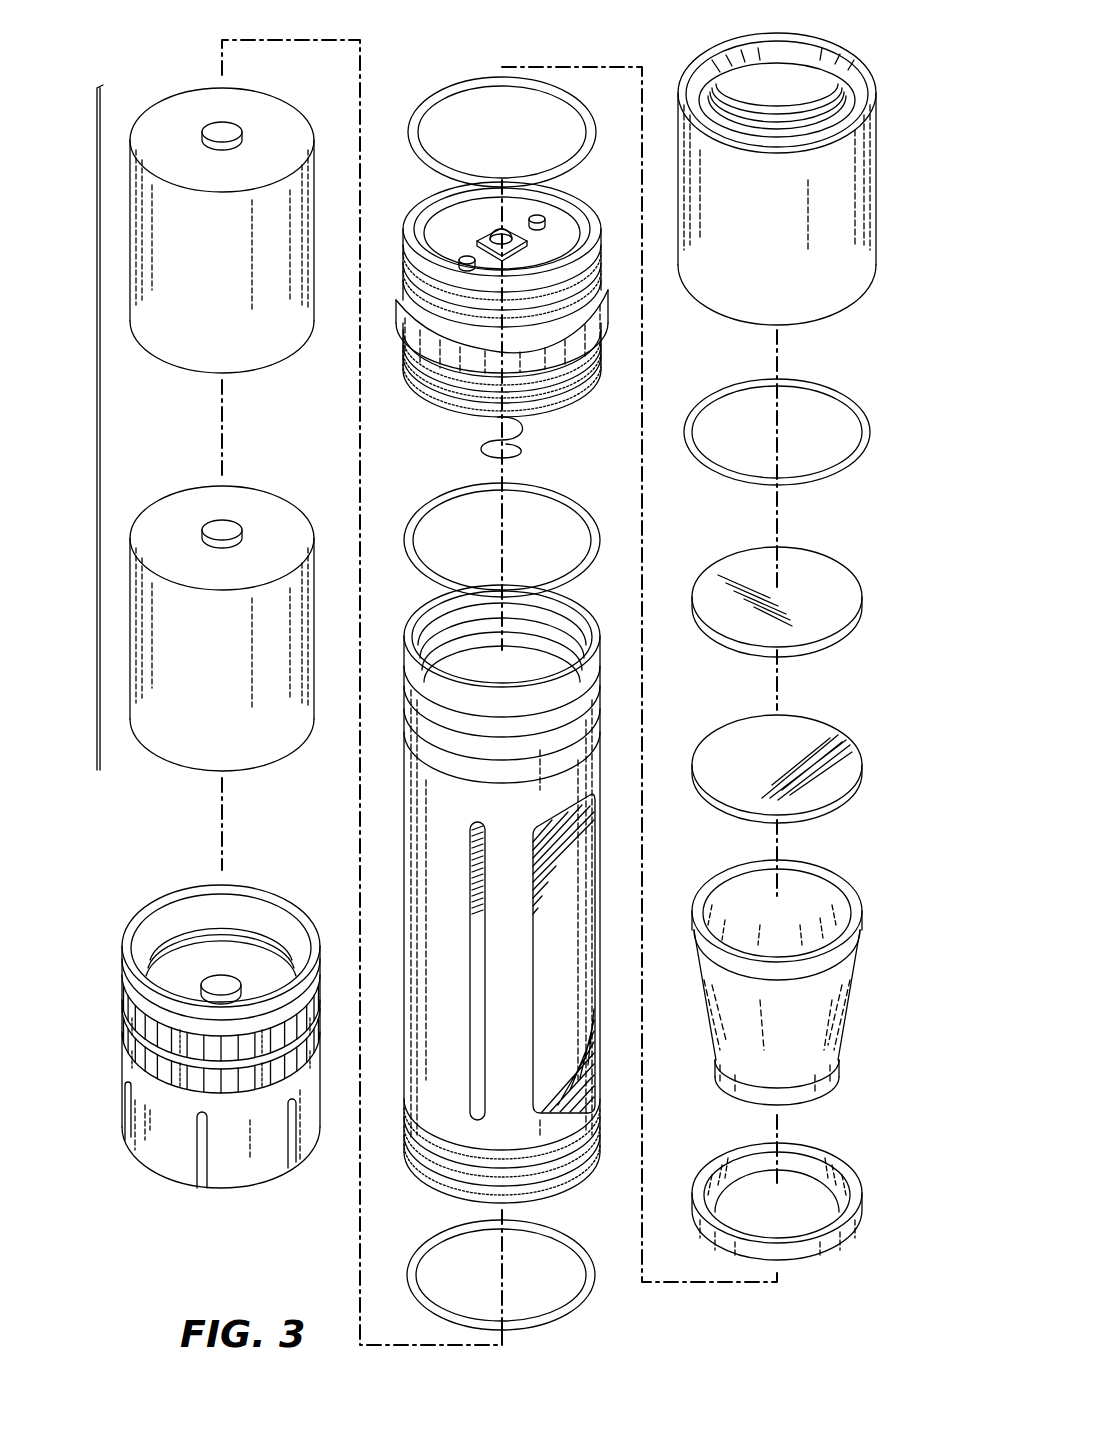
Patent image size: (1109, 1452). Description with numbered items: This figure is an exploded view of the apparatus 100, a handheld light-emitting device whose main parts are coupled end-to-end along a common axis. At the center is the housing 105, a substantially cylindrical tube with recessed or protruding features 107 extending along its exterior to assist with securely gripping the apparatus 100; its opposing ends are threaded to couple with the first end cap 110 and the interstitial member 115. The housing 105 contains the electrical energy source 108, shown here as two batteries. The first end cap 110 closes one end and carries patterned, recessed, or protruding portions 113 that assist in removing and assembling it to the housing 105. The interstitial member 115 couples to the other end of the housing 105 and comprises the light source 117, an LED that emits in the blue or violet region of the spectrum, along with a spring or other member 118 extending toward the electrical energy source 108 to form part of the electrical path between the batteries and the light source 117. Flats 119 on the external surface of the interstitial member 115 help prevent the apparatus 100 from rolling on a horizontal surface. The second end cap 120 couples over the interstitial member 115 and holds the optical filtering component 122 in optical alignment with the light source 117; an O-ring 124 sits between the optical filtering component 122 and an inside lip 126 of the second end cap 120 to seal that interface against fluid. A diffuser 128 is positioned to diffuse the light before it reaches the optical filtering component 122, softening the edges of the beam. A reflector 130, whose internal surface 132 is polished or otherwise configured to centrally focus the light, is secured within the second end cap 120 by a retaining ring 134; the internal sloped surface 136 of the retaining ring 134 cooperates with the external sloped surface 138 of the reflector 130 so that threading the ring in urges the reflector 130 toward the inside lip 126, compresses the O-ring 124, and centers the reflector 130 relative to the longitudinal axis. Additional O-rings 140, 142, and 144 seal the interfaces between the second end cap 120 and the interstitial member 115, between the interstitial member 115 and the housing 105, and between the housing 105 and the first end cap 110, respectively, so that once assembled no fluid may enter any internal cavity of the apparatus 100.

The apparatus 100 is at (138, 44).
The housing 105 is at (585, 1183).
The recessed and/or protruding features 107 is at (590, 950).
The electrical energy source 108 is at (97, 421).
The first end cap 110 is at (150, 1160).
The patterned, recessed, and/or protruding portions 113 is at (124, 995).
The interstitial member 115 is at (578, 392).
The light source 117 is at (495, 235).
The spring and/or other member 118 is at (480, 450).
The flats 119 is at (438, 356).
The second end cap 120 is at (880, 178).
The optical filtering component 122 is at (815, 565).
The O-ring 124 is at (838, 388).
The inside lip 126 is at (805, 82).
The diffuser 128 is at (805, 735).
The reflector 130 is at (866, 972).
The internal surface 132 is at (830, 890).
The retaining ring 134 is at (810, 1248).
The internal sloped surface 136 is at (812, 1165).
The external sloped surface 138 is at (833, 1013).
The O-ring 140 is at (432, 92).
The O-ring 142 is at (590, 512).
The O-ring 144 is at (590, 1300).